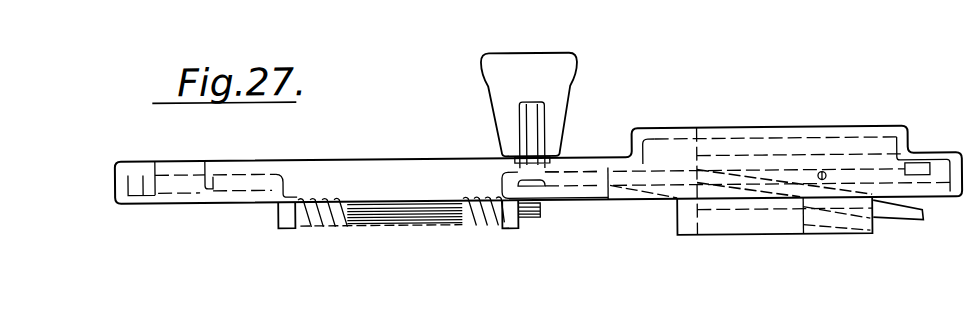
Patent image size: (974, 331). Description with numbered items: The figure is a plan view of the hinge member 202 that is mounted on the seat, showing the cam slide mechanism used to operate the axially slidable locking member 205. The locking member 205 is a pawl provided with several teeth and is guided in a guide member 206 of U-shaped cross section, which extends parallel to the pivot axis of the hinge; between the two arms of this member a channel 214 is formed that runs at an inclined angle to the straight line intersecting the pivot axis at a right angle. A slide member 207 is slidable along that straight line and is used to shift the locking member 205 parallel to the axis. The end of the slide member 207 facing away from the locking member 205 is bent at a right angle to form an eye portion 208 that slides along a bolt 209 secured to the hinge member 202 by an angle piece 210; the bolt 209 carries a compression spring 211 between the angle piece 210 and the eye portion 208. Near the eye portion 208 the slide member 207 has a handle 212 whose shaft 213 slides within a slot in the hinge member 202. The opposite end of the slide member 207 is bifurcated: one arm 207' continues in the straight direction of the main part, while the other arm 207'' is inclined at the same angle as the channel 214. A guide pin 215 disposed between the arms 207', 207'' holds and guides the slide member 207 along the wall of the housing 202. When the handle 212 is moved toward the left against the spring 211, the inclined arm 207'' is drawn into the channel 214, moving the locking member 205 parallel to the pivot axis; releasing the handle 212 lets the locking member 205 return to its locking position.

The hinge member 202 is at (320, 163).
The handle 212 is at (505, 83).
The shaft 213 is at (535, 154).
The slide member 207 is at (556, 154).
The arm 207' is at (927, 139).
The inclined arm 207'' is at (900, 232).
The guide pin 215 is at (826, 176).
The angle piece 210 is at (287, 228).
The compression spring 211 is at (317, 226).
The bolt 209 is at (420, 207).
The eye portion 208 is at (507, 218).
The guide member 206 is at (683, 229).
The locking member 205 is at (723, 209).
The channel 214 is at (757, 195).